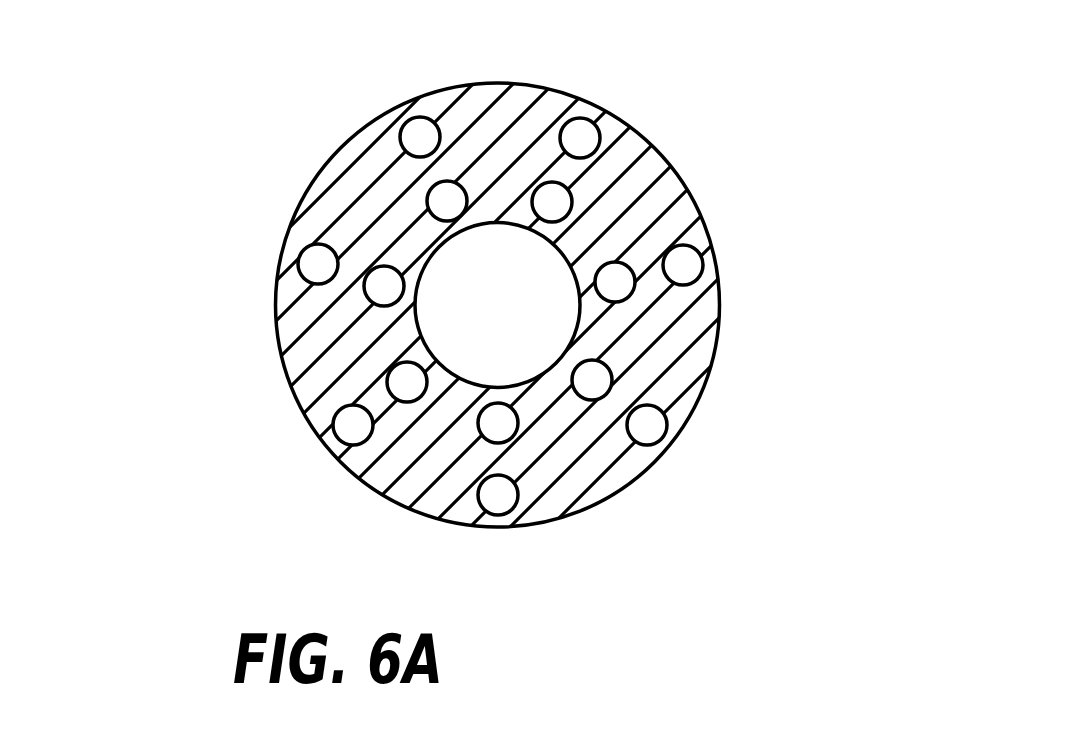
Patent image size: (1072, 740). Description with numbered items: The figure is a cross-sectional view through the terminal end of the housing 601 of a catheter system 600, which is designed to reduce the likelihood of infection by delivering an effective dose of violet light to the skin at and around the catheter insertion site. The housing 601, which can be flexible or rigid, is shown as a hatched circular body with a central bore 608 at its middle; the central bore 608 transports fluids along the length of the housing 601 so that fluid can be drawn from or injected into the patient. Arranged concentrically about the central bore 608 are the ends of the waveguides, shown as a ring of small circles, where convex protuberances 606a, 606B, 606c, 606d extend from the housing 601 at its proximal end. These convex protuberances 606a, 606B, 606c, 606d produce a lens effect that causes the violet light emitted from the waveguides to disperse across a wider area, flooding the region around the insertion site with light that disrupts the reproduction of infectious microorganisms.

The catheter system 600 is at (1035, 322).
The housing 601 is at (675, 342).
The central bore 608 is at (467, 322).
The convex protuberance 606a is at (603, 112).
The convex protuberance 606B is at (567, 197).
The convex protuberance 606c is at (512, 435).
The convex protuberance 606d is at (512, 512).